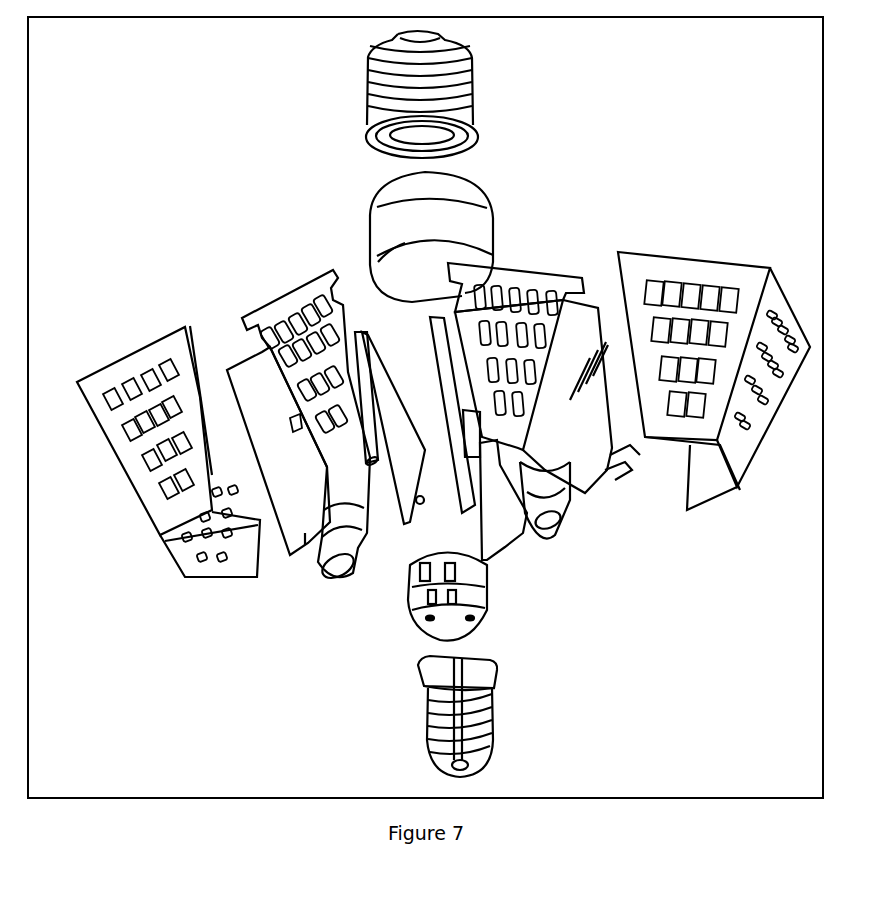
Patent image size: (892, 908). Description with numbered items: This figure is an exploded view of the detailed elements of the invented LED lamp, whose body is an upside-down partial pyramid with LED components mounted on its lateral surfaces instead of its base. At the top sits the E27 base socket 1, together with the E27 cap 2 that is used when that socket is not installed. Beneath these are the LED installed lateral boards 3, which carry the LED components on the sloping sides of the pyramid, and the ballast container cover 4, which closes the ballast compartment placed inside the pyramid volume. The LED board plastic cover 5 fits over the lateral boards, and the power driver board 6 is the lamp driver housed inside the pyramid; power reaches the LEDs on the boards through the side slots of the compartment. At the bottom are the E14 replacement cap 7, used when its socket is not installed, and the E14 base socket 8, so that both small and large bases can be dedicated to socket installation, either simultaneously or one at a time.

The E27 base socket 1 is at (370, 96).
The E27 cap 2 is at (370, 209).
The LED installed lateral boards 3 is at (308, 285).
The ballast container cover 4 is at (262, 362).
The LED board plastic cover 5 is at (150, 522).
The power driver board 6 is at (406, 522).
The E14 replacement cap 7 is at (408, 622).
The E14 base socket 8 is at (427, 728).